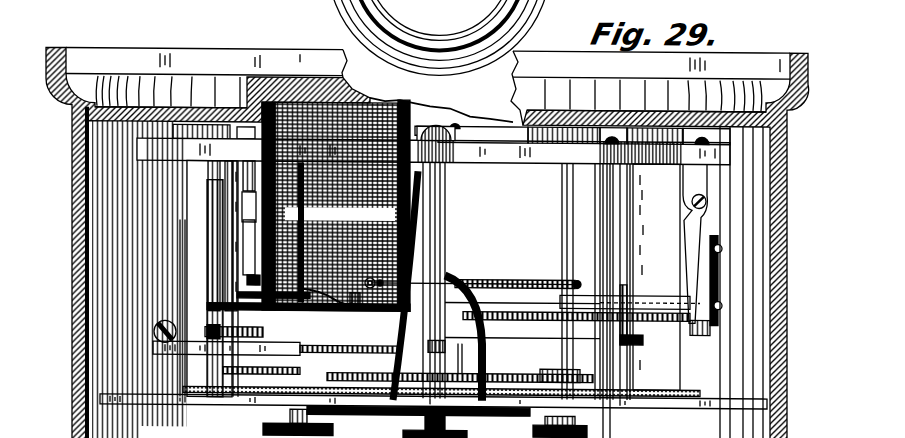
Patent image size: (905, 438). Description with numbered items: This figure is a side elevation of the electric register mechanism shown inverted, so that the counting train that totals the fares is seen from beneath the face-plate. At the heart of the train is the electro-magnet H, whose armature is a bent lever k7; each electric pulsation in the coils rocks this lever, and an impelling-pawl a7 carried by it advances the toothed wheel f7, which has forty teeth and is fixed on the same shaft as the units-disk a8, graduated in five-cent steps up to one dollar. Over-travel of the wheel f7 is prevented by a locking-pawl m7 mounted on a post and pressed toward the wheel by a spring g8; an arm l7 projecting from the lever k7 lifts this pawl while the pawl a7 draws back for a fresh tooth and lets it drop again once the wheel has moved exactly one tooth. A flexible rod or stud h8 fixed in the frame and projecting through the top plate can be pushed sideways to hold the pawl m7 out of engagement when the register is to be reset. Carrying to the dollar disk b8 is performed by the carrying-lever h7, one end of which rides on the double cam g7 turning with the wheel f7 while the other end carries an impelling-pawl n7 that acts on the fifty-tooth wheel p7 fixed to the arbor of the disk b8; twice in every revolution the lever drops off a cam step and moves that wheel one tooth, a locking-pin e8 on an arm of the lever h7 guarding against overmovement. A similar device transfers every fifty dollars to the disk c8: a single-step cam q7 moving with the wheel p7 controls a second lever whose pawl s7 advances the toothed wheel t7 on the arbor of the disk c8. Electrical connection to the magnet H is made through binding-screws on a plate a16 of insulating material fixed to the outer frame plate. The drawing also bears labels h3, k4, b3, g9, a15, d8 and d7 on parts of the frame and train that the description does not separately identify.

The electro-magnet H is at (345, 130).
The armature lever h3 is at (340, 265).
The connecting wire k4 is at (330, 289).
The magnet core b3 is at (303, 218).
The spring g9 is at (521, 233).
The arm l7 is at (586, 280).
The bent lever k7 is at (511, 285).
The toothed wheel f7 is at (512, 313).
The carrying-lever h7 is at (525, 368).
The toothed wheel p7 is at (503, 367).
The toothed wheel t7 is at (455, 368).
The column a15 is at (420, 370).
The locking-pin e8 is at (385, 352).
The pawl s7 is at (565, 380).
The disk b8 is at (477, 400).
The plate of insulating material a16 is at (478, 405).
The pedestal d8 is at (385, 427).
The pedestal d7 is at (533, 430).
The impelling-pawl n7 is at (206, 322).
The cam q7 is at (223, 368).
The disk c8 is at (255, 403).
The spring g8 is at (687, 246).
The impelling-pawl a7 is at (688, 278).
The locking-pawl m7 is at (640, 320).
The double cam g7 is at (632, 340).
The flexible rod or stud h8 is at (685, 357).
The units-disk a8 is at (640, 398).